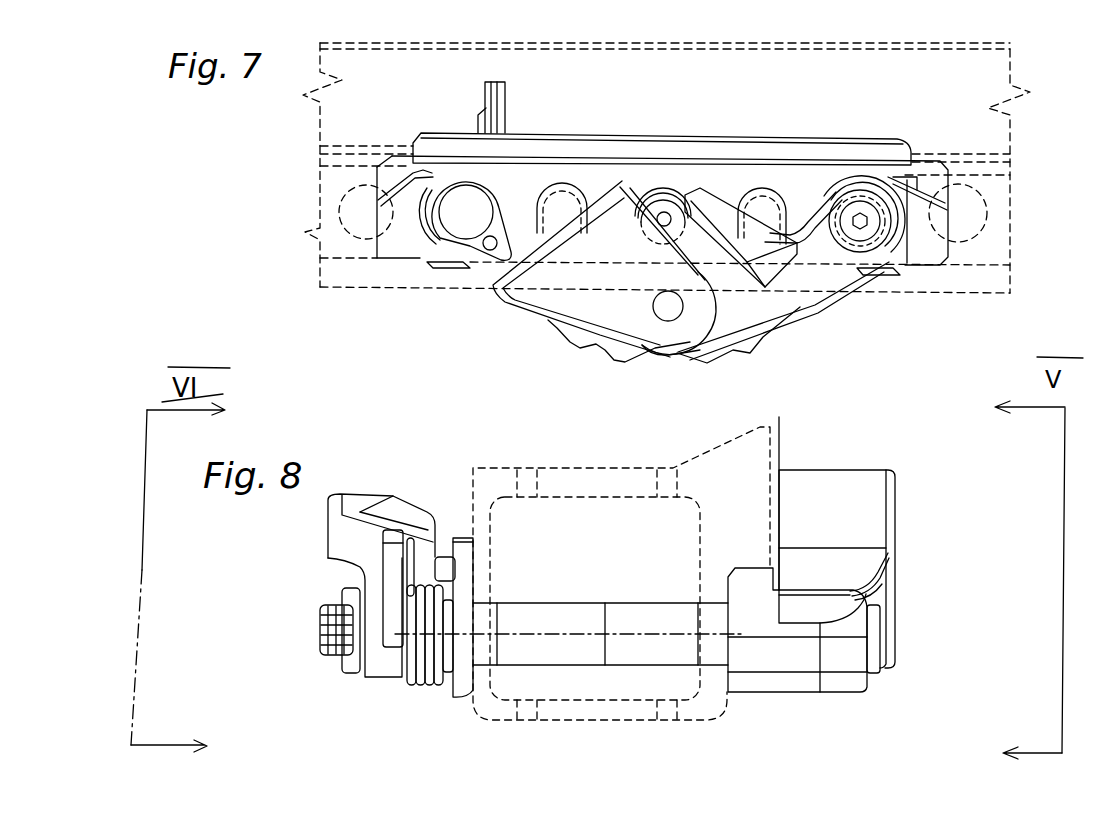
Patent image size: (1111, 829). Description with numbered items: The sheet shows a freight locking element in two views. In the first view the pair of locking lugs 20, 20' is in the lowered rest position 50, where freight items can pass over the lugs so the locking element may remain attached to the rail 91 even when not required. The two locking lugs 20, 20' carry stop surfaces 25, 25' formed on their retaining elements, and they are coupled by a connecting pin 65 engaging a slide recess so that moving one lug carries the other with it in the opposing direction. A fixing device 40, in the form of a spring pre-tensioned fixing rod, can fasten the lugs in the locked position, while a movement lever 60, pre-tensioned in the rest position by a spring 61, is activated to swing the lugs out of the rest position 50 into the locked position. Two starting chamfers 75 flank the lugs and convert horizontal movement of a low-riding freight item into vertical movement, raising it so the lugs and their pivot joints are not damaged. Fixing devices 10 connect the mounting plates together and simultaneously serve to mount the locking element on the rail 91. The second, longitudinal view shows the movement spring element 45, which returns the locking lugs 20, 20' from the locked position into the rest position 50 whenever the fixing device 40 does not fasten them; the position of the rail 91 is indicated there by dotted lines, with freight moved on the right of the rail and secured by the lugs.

In FIG. 7, the fixing device 10 is at (585, 152).
In FIG. 7, the locking lug 20 is at (591, 280).
In FIG. 8, the locking lug 20 is at (877, 569).
In FIG. 7, the locking lug 20' is at (762, 269).
In FIG. 7, the stop surface 25 is at (577, 194).
In FIG. 7, the stop surface 25' is at (749, 200).
In FIG. 7, the fixing device 40 is at (657, 187).
In FIG. 8, the fixing device 40 is at (332, 664).
In FIG. 8, the movement spring element 45 is at (400, 683).
In FIG. 7, the rest position 50 is at (661, 358).
In FIG. 7, the movement lever 60 is at (485, 92).
In FIG. 8, the movement lever 60 is at (378, 490).
In FIG. 8, the spring 61 is at (432, 688).
In FIG. 7, the connecting pin 65 is at (651, 298).
In FIG. 7, the starting chamfer 75 is at (372, 190).
In FIG. 8, the starting chamfer 75 is at (895, 580).
In FIG. 7, the rail 91 is at (980, 146).
In FIG. 8, the rail 91 is at (496, 482).